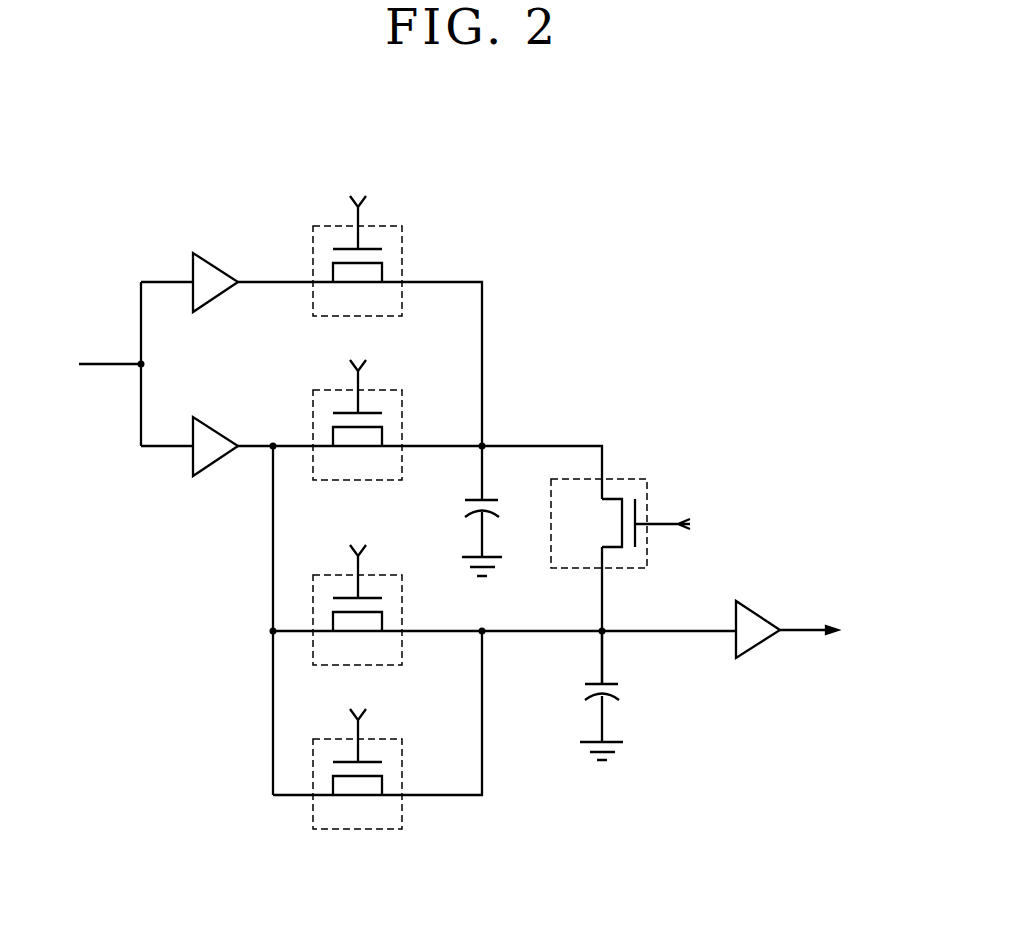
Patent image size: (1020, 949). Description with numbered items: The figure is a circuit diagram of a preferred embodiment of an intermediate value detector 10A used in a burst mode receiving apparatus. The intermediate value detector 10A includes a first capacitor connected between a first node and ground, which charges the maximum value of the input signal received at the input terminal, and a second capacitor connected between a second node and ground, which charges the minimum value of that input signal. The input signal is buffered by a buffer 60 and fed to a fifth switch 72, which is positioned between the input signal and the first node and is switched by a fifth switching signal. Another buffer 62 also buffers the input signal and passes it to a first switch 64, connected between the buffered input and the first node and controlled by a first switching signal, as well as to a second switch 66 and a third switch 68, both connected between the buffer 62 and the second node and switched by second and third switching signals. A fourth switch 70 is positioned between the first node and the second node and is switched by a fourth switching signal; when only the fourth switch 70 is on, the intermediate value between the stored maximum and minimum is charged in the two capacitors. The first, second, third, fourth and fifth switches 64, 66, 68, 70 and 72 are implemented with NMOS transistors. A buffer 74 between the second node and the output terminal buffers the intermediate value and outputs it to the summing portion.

The intermediate value detector 10A is at (651, 302).
The buffer 60 is at (216, 264).
The buffer 62 is at (216, 428).
The first switch 64 is at (402, 418).
The second switch 66 is at (402, 603).
The third switch 68 is at (402, 767).
The fourth switch 70 is at (628, 478).
The fifth switch 72 is at (402, 254).
The buffer 74 is at (758, 612).